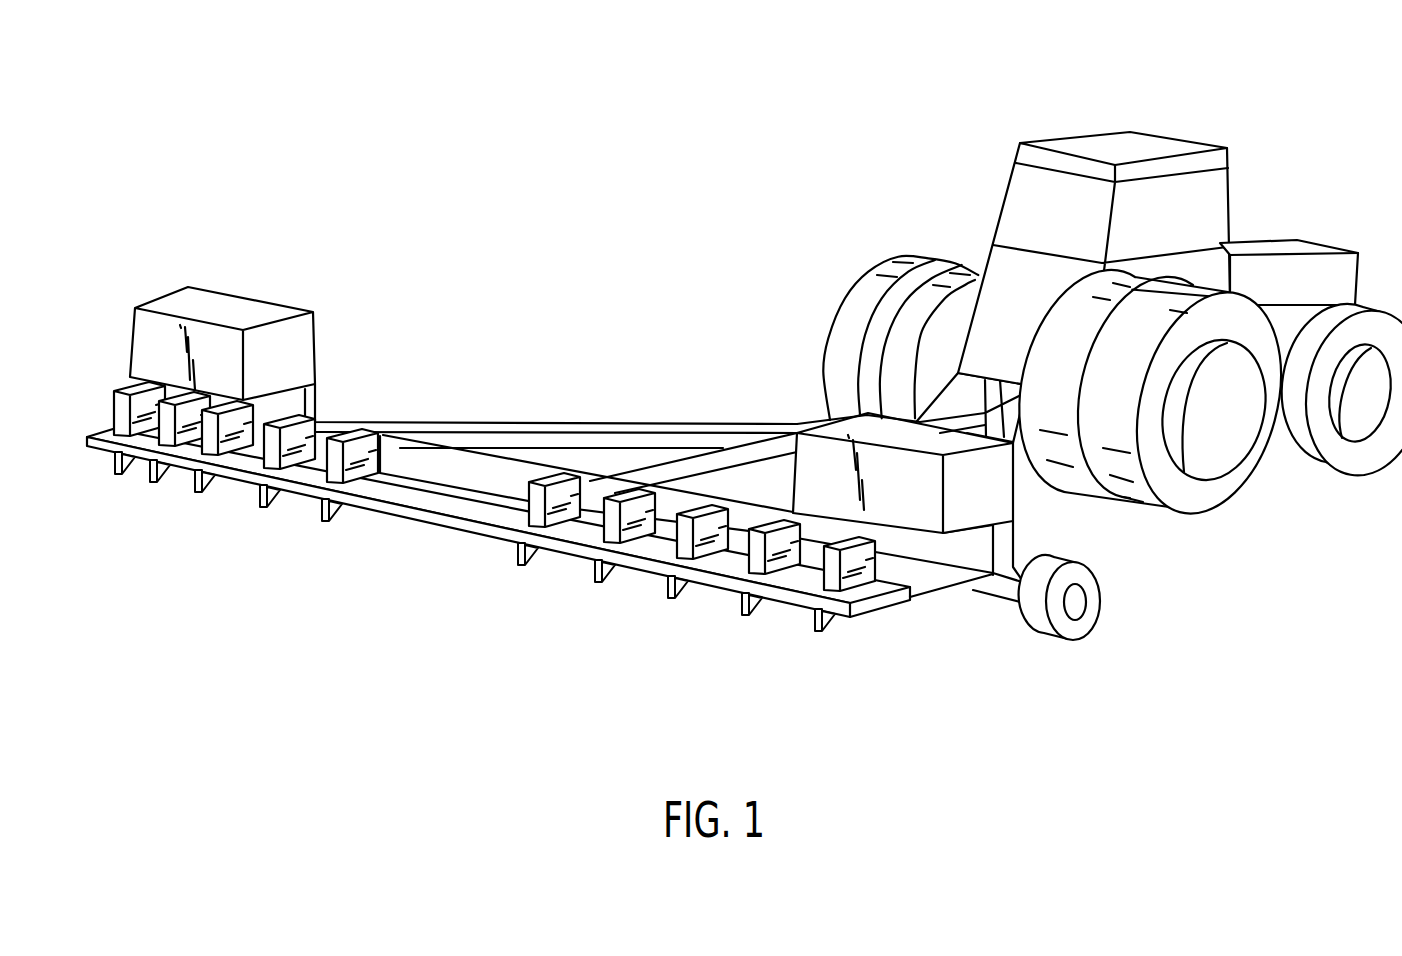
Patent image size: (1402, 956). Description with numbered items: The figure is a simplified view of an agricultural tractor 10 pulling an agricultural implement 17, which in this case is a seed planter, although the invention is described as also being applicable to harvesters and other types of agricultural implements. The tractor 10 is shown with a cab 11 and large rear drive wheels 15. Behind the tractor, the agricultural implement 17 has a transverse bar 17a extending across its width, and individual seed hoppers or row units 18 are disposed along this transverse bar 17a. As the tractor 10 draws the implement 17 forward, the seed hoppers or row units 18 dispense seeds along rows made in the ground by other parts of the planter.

The tractor 10 is at (1099, 308).
The cab 11 is at (1233, 218).
The large rear drive wheels 15 is at (1183, 523).
The agricultural implement 17 is at (546, 386).
The transverse bar 17a is at (242, 461).
The seed hoppers or row units 18 is at (525, 512).